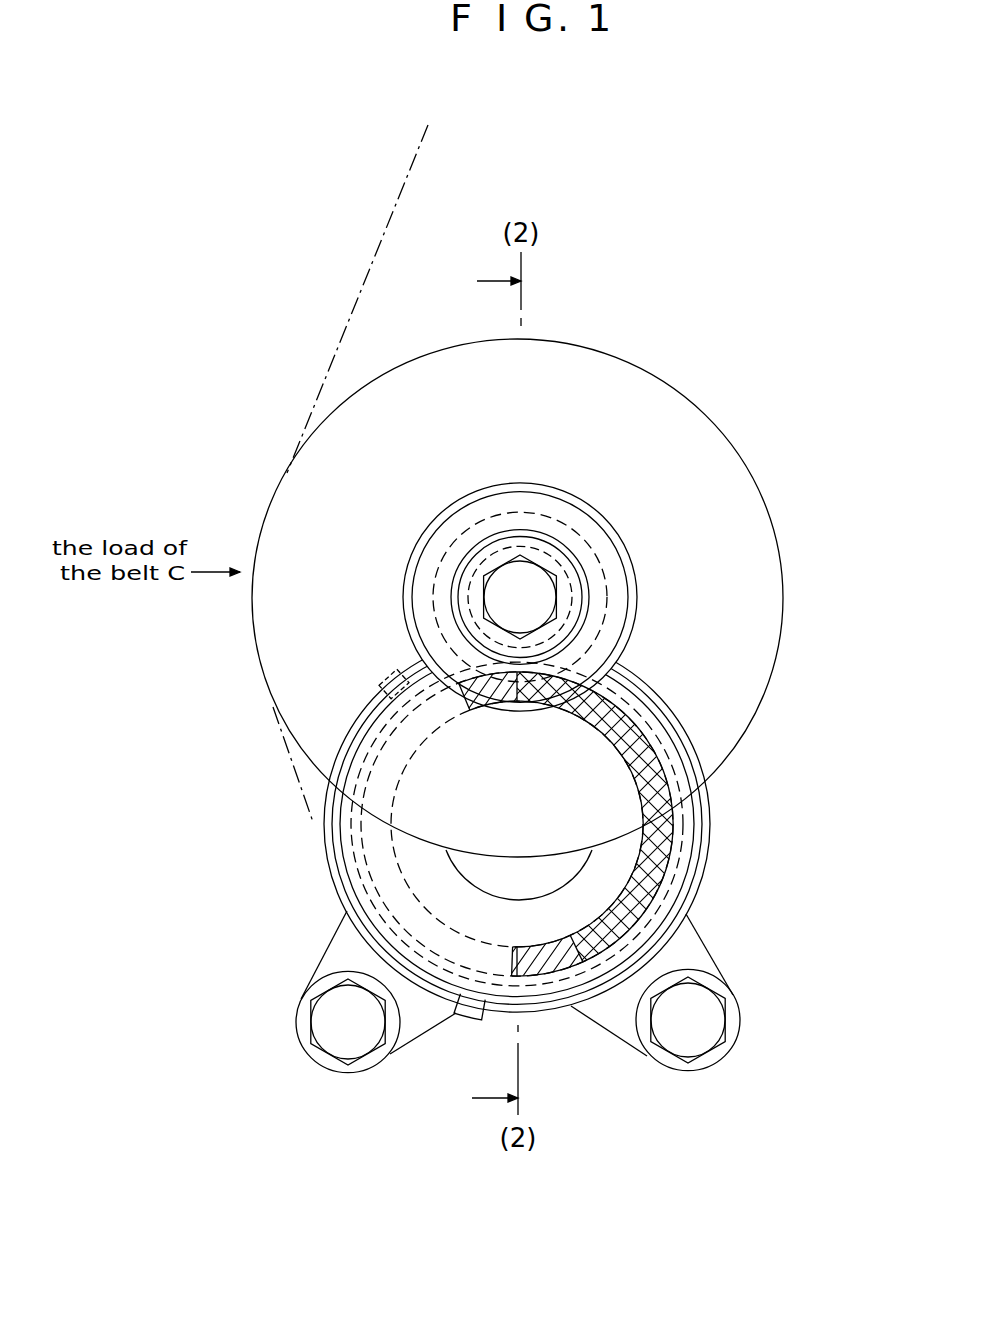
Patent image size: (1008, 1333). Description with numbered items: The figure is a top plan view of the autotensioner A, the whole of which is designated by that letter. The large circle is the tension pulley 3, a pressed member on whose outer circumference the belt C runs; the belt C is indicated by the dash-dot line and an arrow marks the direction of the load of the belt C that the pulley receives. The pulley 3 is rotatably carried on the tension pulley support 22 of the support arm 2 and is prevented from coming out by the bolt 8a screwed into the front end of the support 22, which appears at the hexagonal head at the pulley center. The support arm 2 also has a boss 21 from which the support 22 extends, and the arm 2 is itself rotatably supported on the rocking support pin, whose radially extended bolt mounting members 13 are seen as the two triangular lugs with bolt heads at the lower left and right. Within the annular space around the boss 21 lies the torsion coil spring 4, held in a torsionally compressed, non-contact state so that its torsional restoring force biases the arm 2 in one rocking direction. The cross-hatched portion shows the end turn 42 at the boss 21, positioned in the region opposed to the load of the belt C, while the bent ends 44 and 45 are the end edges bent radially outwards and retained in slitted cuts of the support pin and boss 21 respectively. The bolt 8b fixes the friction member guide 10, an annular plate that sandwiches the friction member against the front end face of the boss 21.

The autotensioner A is at (800, 383).
The belt C is at (357, 292).
The support arm 2 is at (650, 662).
The tension pulley 3 is at (608, 372).
The torsion coil spring 4 is at (368, 869).
The bolt 8a is at (532, 585).
The bolt 8b is at (504, 882).
The friction member guide 10 is at (682, 880).
The bolt mounting members 13 is at (325, 963).
The boss 21 is at (712, 853).
The tension pulley support 22 is at (598, 555).
The end turn 42 is at (708, 828).
The bent end 44 is at (466, 1021).
The bent end 45 is at (385, 676).